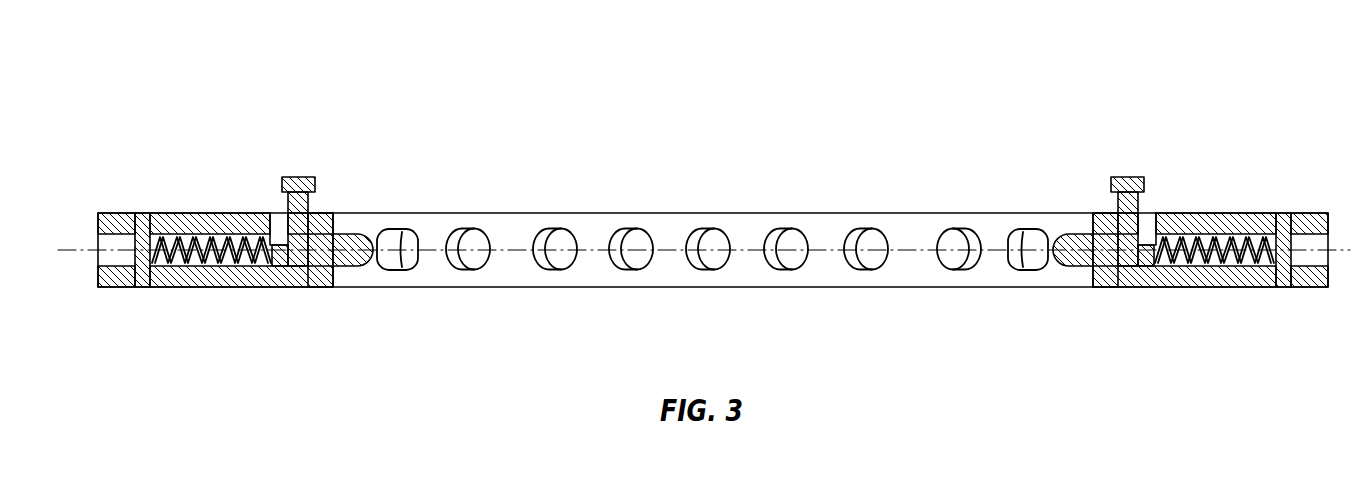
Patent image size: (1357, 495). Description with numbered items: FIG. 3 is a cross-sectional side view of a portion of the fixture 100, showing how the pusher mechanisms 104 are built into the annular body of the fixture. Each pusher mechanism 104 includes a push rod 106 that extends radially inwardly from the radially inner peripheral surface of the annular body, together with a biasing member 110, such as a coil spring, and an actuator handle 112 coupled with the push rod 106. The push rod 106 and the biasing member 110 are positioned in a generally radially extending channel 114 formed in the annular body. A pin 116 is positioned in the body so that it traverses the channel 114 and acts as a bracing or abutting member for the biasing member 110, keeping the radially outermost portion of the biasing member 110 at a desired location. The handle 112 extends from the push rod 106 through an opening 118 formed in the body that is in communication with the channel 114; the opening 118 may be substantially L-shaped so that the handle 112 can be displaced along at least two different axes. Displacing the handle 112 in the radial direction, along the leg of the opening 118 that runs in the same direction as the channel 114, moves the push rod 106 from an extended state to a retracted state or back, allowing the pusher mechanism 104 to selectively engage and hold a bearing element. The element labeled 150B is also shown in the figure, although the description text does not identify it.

The fixture 100 is at (1003, 116).
The pusher mechanism 104 is at (292, 158).
The push rod 106 is at (362, 230).
The biasing member 110 is at (218, 288).
The actuator handle 112 is at (310, 203).
The channel 114 is at (196, 270).
The pin 116 is at (145, 213).
The opening 118 is at (273, 212).
The tablet 150B is at (592, 240).